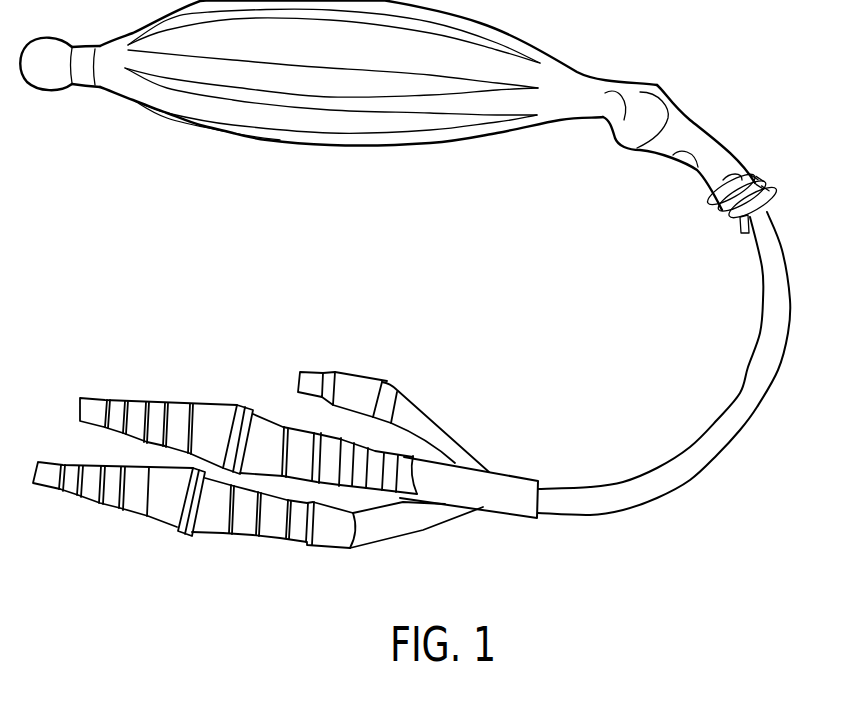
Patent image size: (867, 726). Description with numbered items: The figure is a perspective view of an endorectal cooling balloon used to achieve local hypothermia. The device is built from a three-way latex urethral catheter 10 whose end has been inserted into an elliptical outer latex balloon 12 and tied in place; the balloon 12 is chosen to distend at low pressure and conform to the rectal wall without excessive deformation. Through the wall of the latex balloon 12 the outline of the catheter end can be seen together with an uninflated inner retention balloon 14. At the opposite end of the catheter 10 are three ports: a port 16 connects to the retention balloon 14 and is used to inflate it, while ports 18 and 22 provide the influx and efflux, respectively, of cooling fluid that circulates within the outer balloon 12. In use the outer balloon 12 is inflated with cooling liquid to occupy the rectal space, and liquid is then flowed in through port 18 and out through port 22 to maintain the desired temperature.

The urethral catheter 10 is at (762, 383).
The latex balloon 12 is at (573, 84).
The retention balloon 14 is at (643, 104).
The port 16 is at (357, 383).
The port 18 is at (190, 407).
The port 22 is at (158, 527).